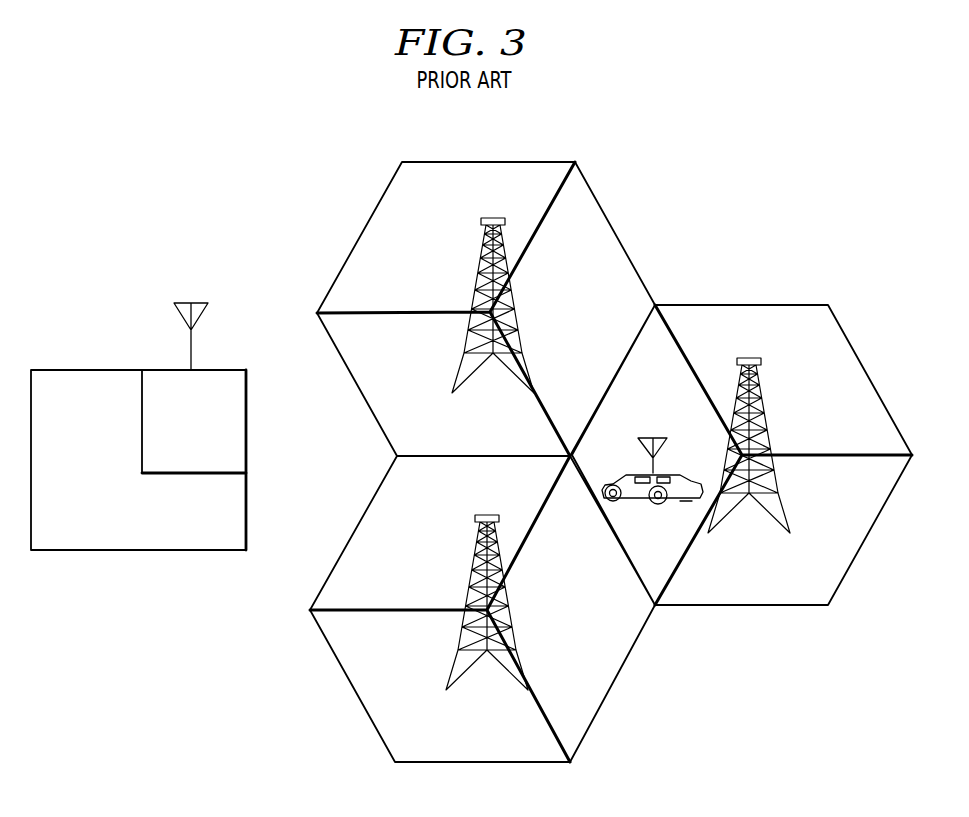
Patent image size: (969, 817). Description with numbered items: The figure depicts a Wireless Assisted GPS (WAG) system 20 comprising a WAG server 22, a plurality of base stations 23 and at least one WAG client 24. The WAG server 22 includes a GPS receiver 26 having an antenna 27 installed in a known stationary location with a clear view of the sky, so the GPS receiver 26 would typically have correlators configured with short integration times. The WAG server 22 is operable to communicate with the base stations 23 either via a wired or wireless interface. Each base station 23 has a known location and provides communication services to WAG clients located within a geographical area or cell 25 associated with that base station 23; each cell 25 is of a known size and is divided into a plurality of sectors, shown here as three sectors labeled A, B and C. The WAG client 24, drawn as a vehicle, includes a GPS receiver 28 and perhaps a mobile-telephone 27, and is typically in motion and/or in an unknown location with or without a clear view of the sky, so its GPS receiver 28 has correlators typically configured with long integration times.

The WAG system 20 is at (455, 123).
The WAG server 22 is at (83, 368).
The base station 23 is at (486, 218).
The WAG client 24 is at (642, 498).
The cell 25 is at (376, 207).
The GPS receiver 26 is at (246, 428).
The antenna 27 is at (199, 318).
The GPS receiver 28 is at (668, 474).